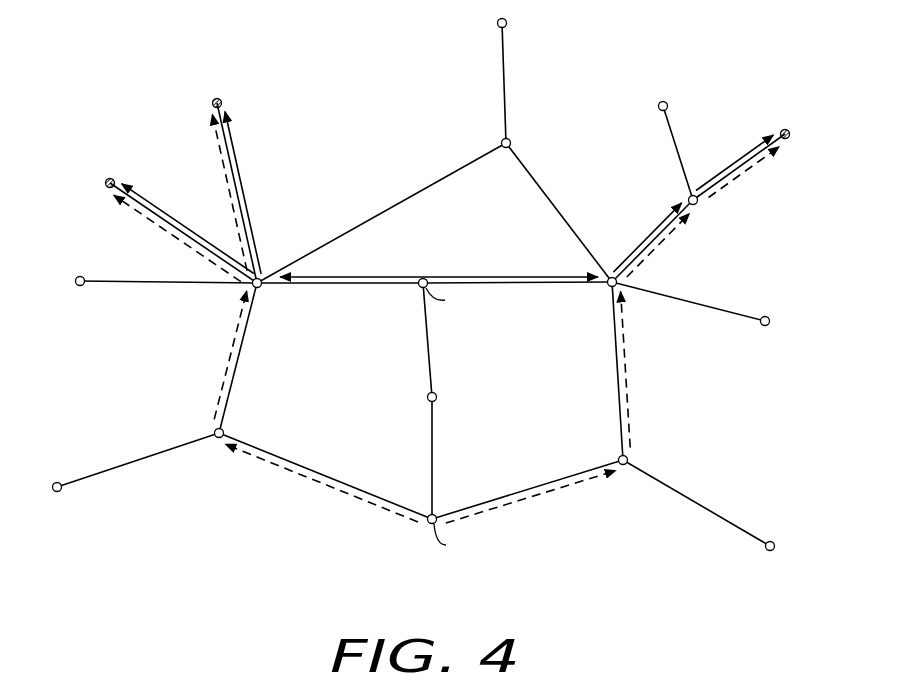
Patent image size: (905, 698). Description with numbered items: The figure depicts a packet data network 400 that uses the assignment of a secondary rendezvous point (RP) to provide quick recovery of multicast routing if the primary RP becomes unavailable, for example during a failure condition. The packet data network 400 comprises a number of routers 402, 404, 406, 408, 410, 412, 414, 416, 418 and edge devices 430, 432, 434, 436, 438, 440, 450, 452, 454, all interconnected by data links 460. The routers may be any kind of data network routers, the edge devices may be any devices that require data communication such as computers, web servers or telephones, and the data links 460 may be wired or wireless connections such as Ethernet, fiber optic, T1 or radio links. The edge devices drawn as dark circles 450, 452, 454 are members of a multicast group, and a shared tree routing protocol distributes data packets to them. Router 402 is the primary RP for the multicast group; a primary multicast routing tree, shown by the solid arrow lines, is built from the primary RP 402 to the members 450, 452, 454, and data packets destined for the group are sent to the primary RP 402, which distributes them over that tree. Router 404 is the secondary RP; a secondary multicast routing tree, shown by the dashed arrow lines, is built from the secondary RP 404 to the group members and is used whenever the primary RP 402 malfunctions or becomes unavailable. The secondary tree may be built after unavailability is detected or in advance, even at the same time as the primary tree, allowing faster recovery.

The packet data network 400 is at (194, 650).
The router 402 is at (425, 279).
The router 404 is at (434, 514).
The router 406 is at (628, 461).
The router 408 is at (607, 286).
The router 410 is at (698, 205).
The router 412 is at (502, 141).
The router 414 is at (262, 288).
The router 416 is at (222, 438).
The router 418 is at (437, 397).
The edge device 430 is at (57, 492).
The edge device 432 is at (80, 286).
The edge device 434 is at (498, 25).
The edge device 436 is at (658, 107).
The edge device 438 is at (768, 326).
The edge device 440 is at (772, 551).
The edge device 450 is at (105, 184).
The edge device 452 is at (212, 104).
The edge device 454 is at (789, 138).
The data link 460 is at (446, 178).